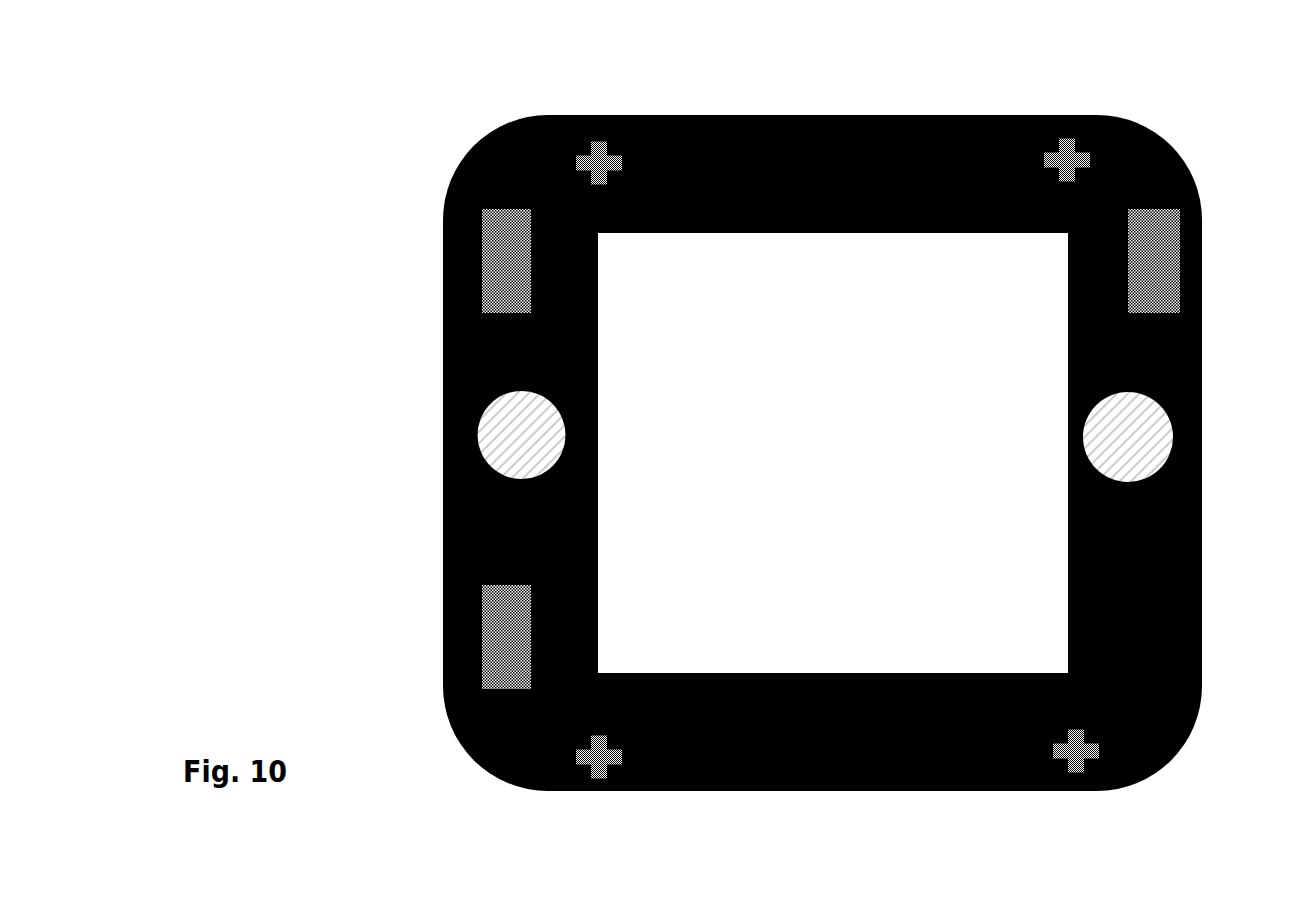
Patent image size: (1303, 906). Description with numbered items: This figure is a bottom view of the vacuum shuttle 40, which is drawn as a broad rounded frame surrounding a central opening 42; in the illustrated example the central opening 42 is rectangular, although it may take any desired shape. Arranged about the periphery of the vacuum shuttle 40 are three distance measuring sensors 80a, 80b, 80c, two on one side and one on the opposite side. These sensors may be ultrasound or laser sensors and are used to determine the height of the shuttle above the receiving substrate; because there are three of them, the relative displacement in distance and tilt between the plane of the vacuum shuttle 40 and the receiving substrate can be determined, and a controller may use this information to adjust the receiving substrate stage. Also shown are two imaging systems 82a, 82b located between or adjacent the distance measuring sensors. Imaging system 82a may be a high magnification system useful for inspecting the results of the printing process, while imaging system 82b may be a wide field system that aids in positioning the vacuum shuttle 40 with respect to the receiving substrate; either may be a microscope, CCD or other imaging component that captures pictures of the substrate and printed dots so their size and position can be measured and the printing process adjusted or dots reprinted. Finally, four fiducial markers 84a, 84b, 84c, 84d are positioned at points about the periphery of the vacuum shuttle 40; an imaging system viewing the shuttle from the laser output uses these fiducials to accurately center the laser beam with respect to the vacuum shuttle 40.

The vacuum shuttle 40 is at (430, 126).
The central opening 42 is at (847, 437).
The distance measuring sensor 80a is at (494, 247).
The distance measuring sensor 80b is at (486, 638).
The distance measuring sensor 80c is at (1160, 236).
The imaging system 82a is at (492, 441).
The imaging system 82b is at (1158, 453).
The fiducial marker 84a is at (595, 116).
The fiducial marker 84b is at (1052, 115).
The fiducial marker 84c is at (1158, 755).
The fiducial marker 84d is at (497, 770).